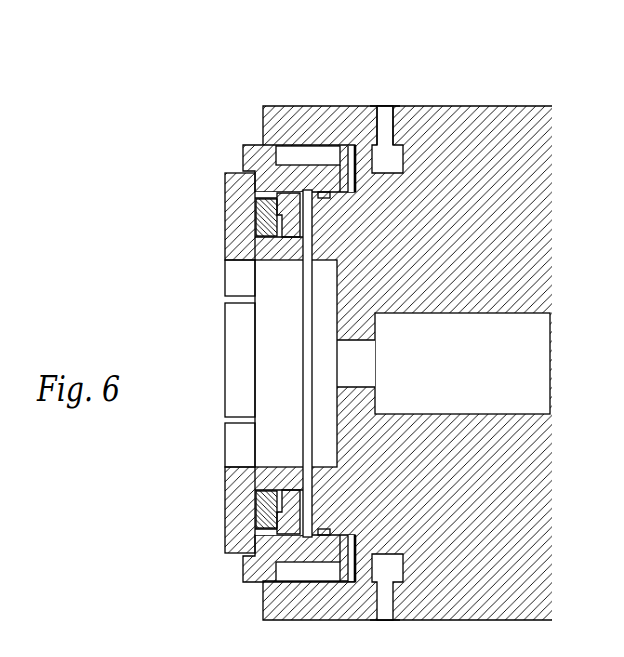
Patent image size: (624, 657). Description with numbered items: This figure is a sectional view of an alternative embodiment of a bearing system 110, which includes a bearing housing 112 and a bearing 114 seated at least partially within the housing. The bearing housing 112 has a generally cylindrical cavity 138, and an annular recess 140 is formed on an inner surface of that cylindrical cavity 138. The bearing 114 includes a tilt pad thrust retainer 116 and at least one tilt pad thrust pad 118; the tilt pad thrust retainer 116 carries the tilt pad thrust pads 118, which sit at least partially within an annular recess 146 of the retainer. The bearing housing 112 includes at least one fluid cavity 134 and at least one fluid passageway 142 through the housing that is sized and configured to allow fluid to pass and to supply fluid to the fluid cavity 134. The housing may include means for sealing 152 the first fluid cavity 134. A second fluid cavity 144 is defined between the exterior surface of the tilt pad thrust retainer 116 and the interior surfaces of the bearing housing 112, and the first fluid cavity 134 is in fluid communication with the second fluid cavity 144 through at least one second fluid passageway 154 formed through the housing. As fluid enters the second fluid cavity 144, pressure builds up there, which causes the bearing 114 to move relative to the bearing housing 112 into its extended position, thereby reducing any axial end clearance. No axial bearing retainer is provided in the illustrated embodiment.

The bearing system 110 is at (157, 171).
The bearing housing 112 is at (282, 598).
The bearing 114 is at (224, 503).
The tilt pad thrust retainer 116 is at (248, 570).
The tilt pad thrust pad 118 is at (247, 215).
The fluid cavity 134 is at (404, 156).
The cylindrical cavity 138 is at (287, 153).
The annular recess 140 is at (343, 162).
The fluid passageway 142 is at (397, 107).
The second fluid cavity 144 is at (354, 173).
The annular recess 146 is at (240, 171).
The means for sealing 152 is at (322, 190).
The second fluid passageway 154 is at (383, 107).